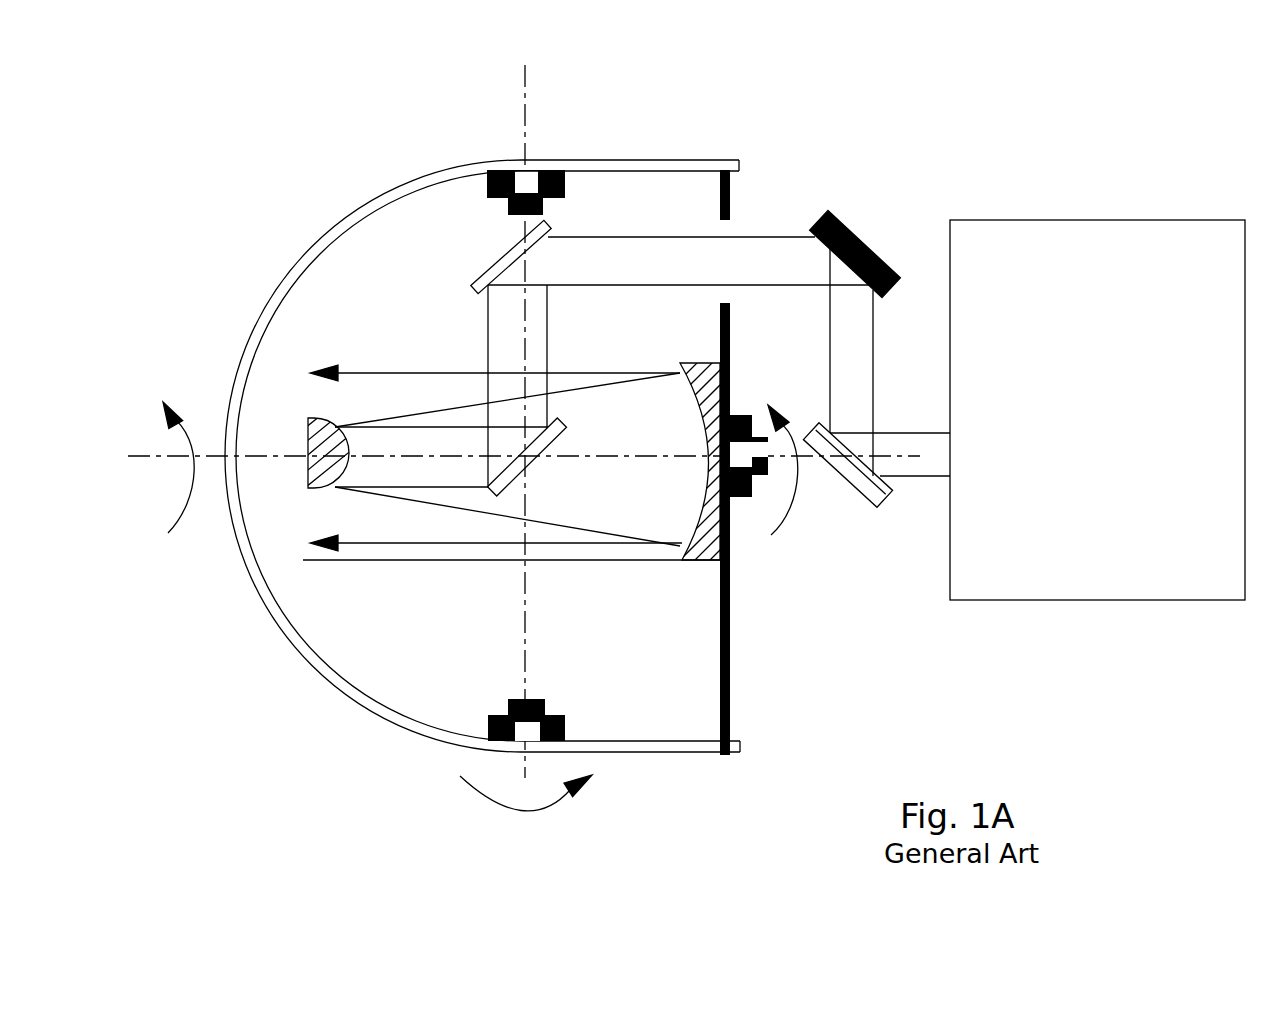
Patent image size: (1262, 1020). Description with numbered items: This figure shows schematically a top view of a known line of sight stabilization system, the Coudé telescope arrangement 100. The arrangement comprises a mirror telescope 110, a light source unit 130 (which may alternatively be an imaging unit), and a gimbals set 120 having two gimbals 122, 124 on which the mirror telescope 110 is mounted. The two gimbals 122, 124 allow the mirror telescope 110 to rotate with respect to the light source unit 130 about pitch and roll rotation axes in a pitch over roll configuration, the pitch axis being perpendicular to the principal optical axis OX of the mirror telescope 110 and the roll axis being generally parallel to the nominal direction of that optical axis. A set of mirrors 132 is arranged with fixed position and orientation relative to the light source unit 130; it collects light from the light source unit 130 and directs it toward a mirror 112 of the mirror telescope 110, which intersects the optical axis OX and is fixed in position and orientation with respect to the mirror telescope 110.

The Coudé telescope arrangement 100 is at (244, 137).
The mirror telescope 110 is at (612, 510).
The mirror 112 is at (531, 466).
The gimbals set 120 is at (365, 205).
The gimbal 122 is at (490, 734).
The gimbal 124 is at (742, 497).
The light source unit 130 is at (1114, 435).
The set of mirrors 132 is at (548, 230).